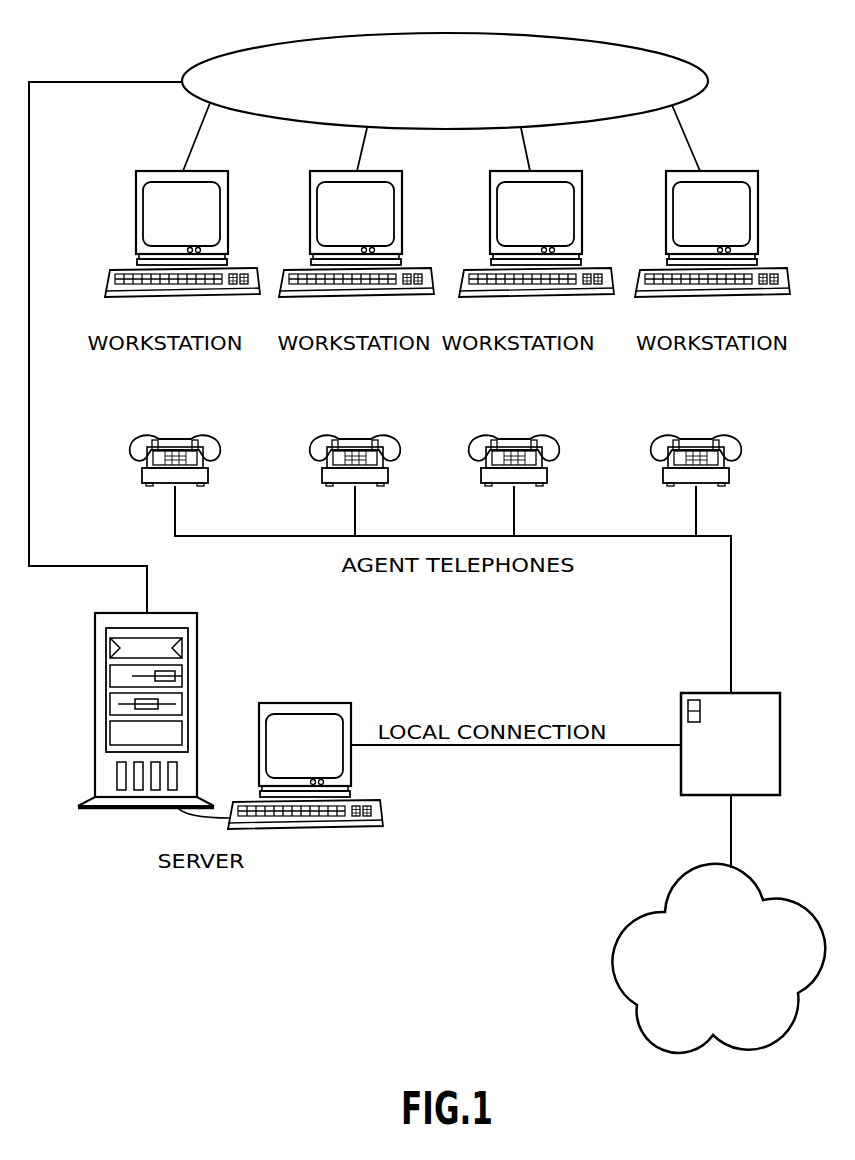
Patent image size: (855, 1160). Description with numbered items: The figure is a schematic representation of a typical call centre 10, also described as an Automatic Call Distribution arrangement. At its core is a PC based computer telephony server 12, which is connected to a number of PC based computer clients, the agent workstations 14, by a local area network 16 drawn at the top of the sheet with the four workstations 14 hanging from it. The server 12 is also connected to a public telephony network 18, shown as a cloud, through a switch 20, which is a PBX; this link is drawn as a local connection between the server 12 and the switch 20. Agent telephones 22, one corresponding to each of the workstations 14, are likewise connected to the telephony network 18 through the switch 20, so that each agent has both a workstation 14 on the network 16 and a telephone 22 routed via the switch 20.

The call centre 10 is at (753, 100).
The computer telephony server 12 is at (122, 808).
The agent workstation 14 is at (135, 212).
The local area network 16 is at (637, 43).
The public telephony network 18 is at (618, 932).
The switch 20 is at (706, 692).
The agent telephone 22 is at (215, 443).